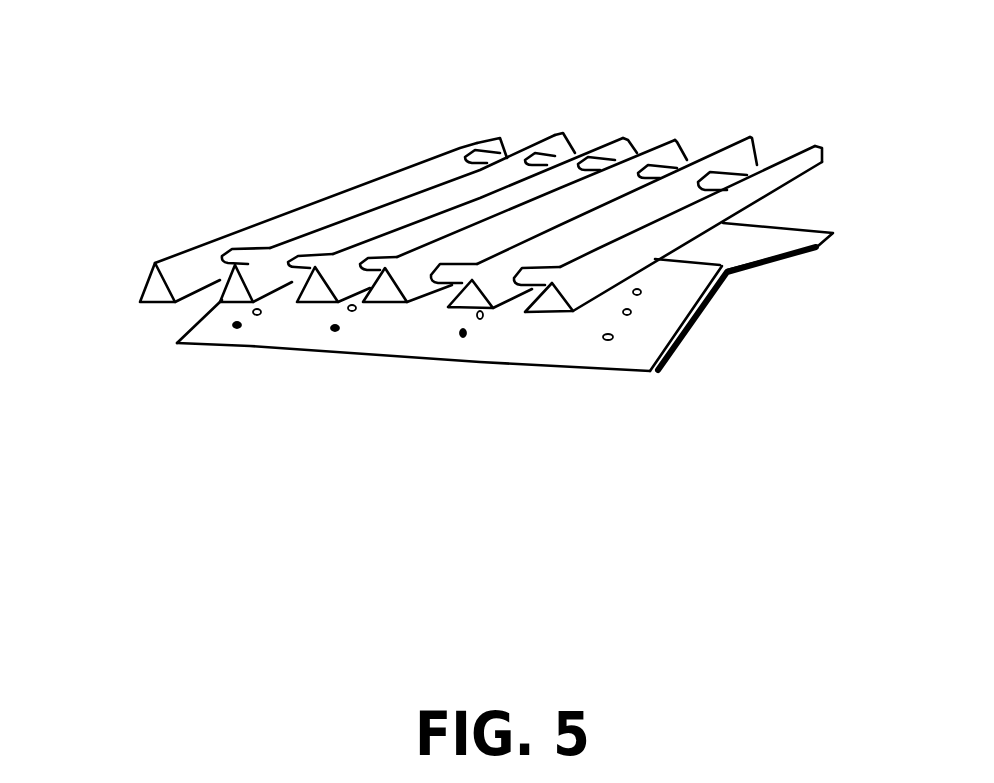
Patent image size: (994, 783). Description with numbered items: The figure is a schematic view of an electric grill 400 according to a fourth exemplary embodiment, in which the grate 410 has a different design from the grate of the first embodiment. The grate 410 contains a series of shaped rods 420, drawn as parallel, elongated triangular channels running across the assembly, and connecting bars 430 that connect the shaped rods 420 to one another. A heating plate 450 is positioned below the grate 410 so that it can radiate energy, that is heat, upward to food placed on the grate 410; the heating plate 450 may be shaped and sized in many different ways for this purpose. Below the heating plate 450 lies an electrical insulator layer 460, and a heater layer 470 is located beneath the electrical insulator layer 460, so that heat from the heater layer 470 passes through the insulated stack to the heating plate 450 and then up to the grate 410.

The electric grill 400 is at (481, 352).
The grate 410 is at (478, 141).
The shaped rods 420 is at (157, 263).
The connecting bars 430 is at (259, 246).
The heating plate 450 is at (548, 348).
The electrical insulator layer 460 is at (657, 366).
The heater layer 470 is at (768, 270).